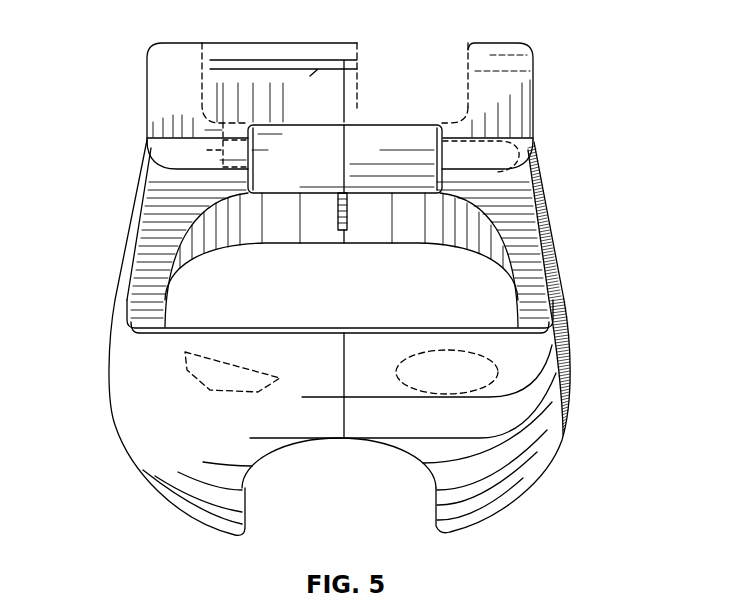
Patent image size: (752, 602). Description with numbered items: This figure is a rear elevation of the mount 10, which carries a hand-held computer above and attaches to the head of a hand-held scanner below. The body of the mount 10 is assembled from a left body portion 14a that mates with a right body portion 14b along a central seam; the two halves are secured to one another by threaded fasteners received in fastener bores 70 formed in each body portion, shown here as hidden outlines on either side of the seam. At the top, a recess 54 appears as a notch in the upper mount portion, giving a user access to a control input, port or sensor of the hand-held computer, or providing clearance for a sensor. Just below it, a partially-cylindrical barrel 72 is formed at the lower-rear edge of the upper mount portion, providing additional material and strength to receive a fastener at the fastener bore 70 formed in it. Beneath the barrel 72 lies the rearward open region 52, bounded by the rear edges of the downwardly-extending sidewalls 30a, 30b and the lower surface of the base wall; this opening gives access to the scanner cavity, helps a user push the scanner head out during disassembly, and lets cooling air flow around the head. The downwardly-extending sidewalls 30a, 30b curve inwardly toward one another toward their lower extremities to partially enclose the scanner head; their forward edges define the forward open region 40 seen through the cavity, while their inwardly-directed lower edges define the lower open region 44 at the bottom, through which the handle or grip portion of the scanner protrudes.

The mount 10 is at (648, 47).
The left body portion 14a is at (150, 70).
The right body portion 14b is at (534, 99).
The recess 54 is at (412, 55).
The partially-cylindrical barrel 72 is at (331, 173).
The rearward open region 52 is at (478, 236).
The forward open region 40 is at (201, 289).
The downwardly-extending sidewall 30a is at (115, 313).
The downwardly-extending sidewall 30b is at (561, 286).
The fastener bore 70 is at (211, 377).
The lower open region 44 is at (283, 514).